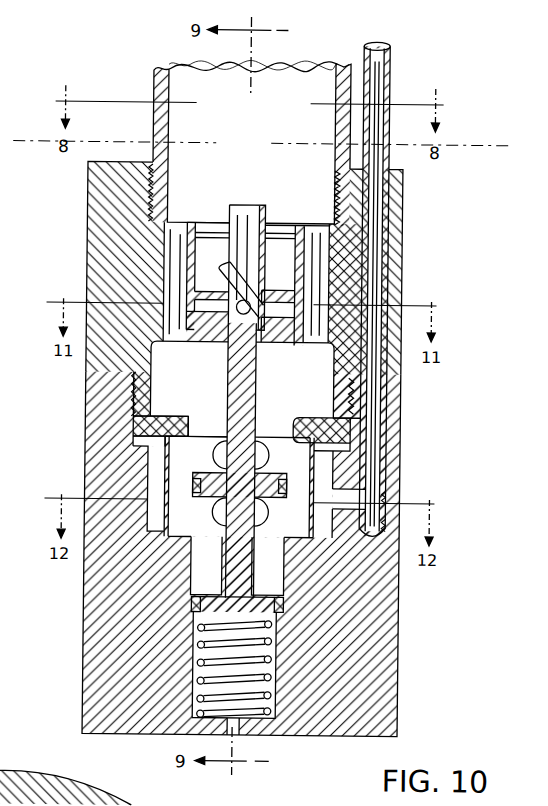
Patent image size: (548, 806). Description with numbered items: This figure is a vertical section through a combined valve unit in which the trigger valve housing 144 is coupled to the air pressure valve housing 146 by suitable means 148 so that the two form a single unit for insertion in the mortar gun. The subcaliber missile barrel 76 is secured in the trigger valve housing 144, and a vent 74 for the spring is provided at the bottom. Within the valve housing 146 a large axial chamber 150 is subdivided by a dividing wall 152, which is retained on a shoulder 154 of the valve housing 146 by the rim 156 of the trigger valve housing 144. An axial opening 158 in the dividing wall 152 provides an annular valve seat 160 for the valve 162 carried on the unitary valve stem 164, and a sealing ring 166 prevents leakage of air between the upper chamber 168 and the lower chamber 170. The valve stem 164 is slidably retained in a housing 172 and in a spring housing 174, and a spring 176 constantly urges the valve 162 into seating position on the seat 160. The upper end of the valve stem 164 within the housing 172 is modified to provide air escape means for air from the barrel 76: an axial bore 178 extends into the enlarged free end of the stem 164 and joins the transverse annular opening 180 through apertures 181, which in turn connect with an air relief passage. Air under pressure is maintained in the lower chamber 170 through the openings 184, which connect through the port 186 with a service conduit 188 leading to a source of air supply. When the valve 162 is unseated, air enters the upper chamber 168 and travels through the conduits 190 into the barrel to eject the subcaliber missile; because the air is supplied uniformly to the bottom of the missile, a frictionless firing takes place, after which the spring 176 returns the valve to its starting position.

The vent 74 is at (240, 736).
The subcaliber missile barrel 76 is at (258, 139).
The trigger valve housing 144 is at (122, 242).
The air pressure valve housing 146 is at (84, 672).
The coupling means 148 is at (132, 400).
The large axial chamber 150 is at (322, 410).
The dividing wall 152 is at (135, 428).
The shoulder 154 is at (142, 448).
The rim 156 is at (152, 420).
The axial opening 158 is at (204, 422).
The annular valve seat 160 is at (293, 426).
The valve 162 is at (268, 478).
The unitary valve stem 164 is at (243, 362).
The sealing ring 166 is at (284, 484).
The upper chamber 168 is at (318, 389).
The lower chamber 170 is at (298, 523).
The housing 172 is at (273, 247).
The spring housing 174 is at (200, 550).
The spring 176 is at (275, 720).
The axial bore 178 is at (246, 212).
The transverse annular opening 180 is at (276, 303).
The apertures 181 is at (240, 300).
The openings 184 is at (218, 448).
The port 186 is at (350, 497).
The service conduit 188 is at (382, 60).
The conduits 190 is at (176, 230).